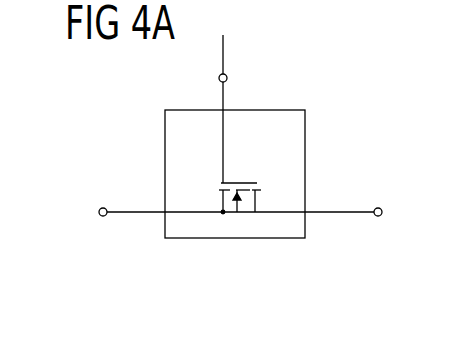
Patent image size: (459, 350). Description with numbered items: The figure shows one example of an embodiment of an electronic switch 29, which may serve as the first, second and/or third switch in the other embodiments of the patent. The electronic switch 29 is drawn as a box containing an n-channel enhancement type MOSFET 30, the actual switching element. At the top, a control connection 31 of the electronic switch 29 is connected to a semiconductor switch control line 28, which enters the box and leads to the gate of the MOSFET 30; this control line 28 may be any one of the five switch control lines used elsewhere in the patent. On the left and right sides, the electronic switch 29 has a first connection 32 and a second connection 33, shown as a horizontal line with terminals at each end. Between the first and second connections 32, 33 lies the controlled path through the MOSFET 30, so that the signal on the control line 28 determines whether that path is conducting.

The semiconductor switch control line 28 is at (225, 57).
The electronic switch 29 is at (234, 240).
The n-channel enhancement type MOSFET 30 is at (238, 178).
The control connection 31 is at (220, 106).
The first connection 32 is at (135, 207).
The second connection 33 is at (338, 207).